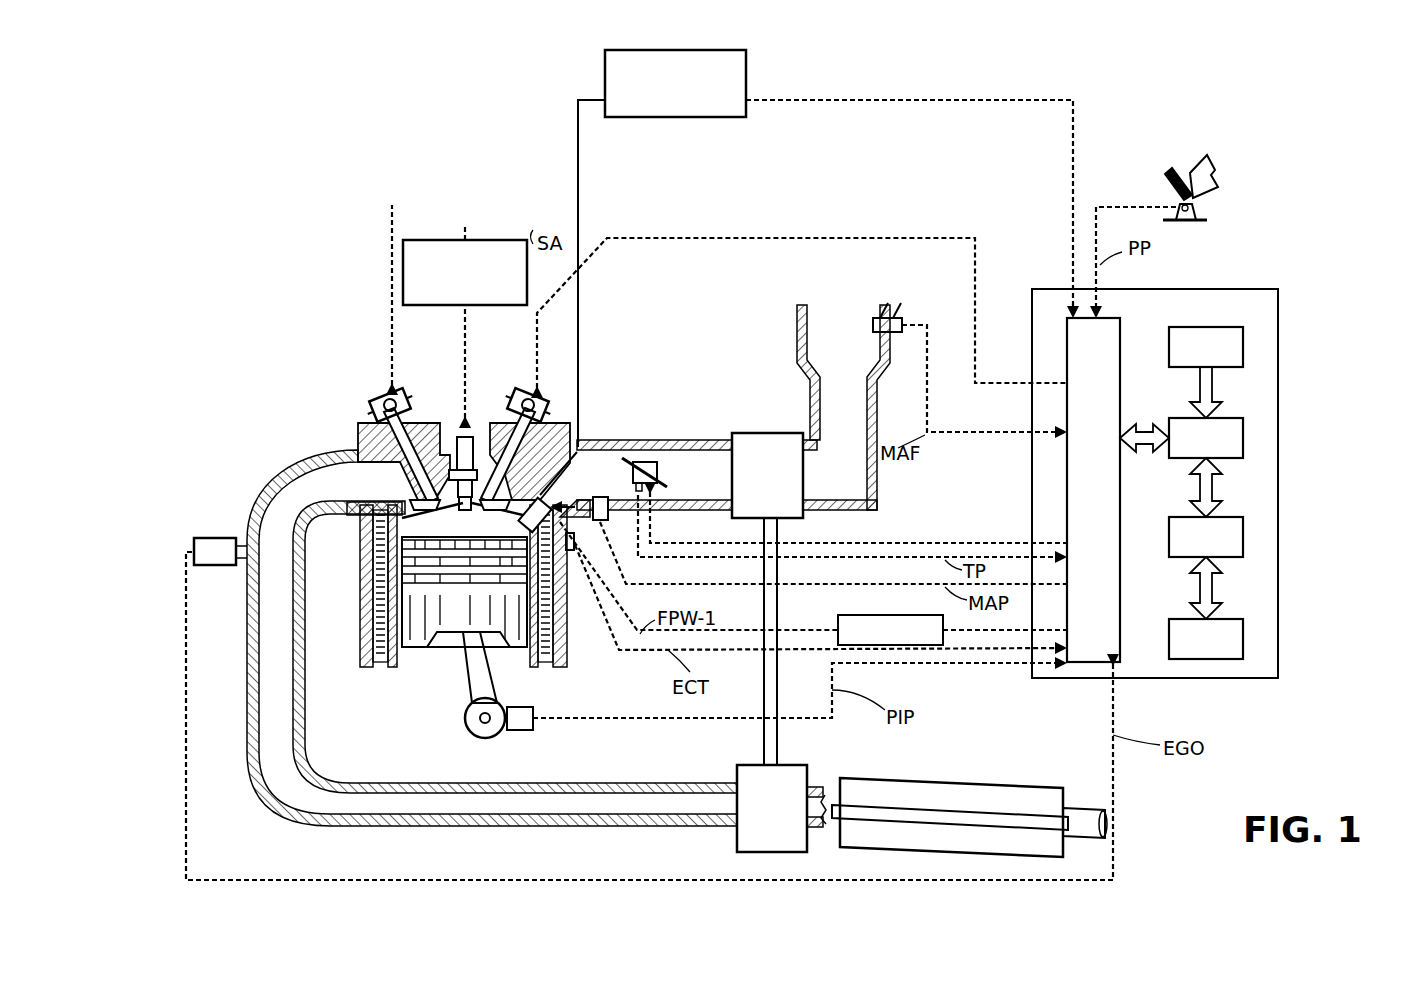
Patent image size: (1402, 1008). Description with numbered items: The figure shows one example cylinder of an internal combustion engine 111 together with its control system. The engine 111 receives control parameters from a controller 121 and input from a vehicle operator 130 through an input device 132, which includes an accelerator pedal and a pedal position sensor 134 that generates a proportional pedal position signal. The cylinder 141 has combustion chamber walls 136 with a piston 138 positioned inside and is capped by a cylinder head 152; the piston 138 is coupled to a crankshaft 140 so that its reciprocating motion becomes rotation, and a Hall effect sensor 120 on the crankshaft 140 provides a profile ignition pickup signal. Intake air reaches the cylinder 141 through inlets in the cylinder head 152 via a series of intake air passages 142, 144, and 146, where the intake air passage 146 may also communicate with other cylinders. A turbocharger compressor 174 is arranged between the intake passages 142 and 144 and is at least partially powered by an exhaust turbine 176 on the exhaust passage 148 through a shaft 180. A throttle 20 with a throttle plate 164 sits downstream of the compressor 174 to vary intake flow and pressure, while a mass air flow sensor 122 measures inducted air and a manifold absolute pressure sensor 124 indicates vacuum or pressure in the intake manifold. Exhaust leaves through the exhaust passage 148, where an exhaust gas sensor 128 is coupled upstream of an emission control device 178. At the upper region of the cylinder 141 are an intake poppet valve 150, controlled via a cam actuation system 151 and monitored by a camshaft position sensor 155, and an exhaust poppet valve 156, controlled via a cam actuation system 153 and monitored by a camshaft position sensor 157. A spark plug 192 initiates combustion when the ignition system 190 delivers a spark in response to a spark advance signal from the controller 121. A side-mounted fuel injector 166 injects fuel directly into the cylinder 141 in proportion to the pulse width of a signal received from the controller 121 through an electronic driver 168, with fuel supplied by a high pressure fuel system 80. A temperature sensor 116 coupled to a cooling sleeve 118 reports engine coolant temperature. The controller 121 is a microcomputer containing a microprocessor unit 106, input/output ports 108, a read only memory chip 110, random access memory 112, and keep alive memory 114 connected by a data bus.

The internal combustion engine 111 is at (180, 128).
The high pressure fuel system 80 is at (748, 65).
The ignition system 190 is at (417, 240).
The vehicle operator 130 is at (1215, 170).
The input device 132 is at (1165, 185).
The pedal position sensor 134 is at (1210, 212).
The controller 121 is at (1278, 292).
The input/output ports 108 is at (1120, 322).
The read only memory chip 110 is at (1243, 345).
The microprocessor unit 106 is at (1243, 435).
The random access memory 112 is at (1243, 535).
The keep alive memory 114 is at (1243, 640).
The intake air passage 142 is at (862, 349).
The mass air flow sensor 122 is at (907, 308).
The intake air passage 144 is at (722, 481).
The intake air passage 146 is at (617, 481).
The compressor 174 is at (752, 433).
The throttle 20 is at (645, 460).
The manifold absolute pressure sensor 124 is at (600, 522).
The electronic driver 168 is at (840, 618).
The throttle plate 164 is at (618, 458).
The shaft 180 is at (770, 730).
The exhaust turbine 176 is at (737, 838).
The emission control device 178 is at (1010, 782).
The exhaust passage 148 is at (349, 494).
The exhaust gas sensor 128 is at (192, 544).
The combustion chamber walls 136 is at (385, 667).
The cooling sleeve 118 is at (560, 640).
The temperature sensor 116 is at (577, 552).
The cylinder 141 is at (402, 545).
The piston 138 is at (445, 635).
The crankshaft 140 is at (470, 735).
The Hall effect sensor 120 is at (522, 733).
The cylinder head 152 is at (360, 432).
The exhaust poppet valve 156 is at (357, 458).
The camshaft position sensor 157 is at (385, 408).
The intake poppet valve 150 is at (470, 470).
The cam actuation system 153 is at (405, 395).
The camshaft position sensor 155 is at (552, 410).
The cam actuation system 151 is at (524, 395).
The spark plug 192 is at (458, 445).
The fuel injector 166 is at (546, 504).